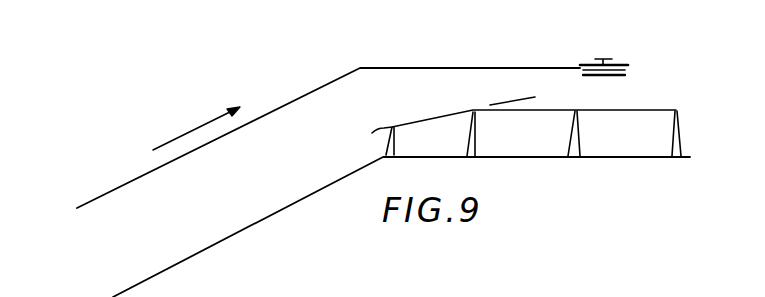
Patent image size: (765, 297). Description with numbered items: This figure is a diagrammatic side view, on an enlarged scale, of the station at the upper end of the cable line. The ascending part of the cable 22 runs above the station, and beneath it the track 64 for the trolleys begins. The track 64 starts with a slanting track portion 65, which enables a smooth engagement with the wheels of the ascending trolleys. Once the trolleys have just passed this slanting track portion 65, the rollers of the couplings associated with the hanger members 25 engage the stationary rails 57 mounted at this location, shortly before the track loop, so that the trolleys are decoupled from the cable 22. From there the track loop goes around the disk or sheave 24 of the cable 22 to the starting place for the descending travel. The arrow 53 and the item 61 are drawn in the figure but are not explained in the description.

The cable 22 is at (254, 118).
The disk or sheave 24 is at (622, 77).
The hanger members 25 is at (197, 150).
The direction of travel 53 is at (196, 128).
The stationary rails 57 is at (518, 100).
The belt 61 is at (467, 133).
The track 64 is at (545, 111).
The slanting track portion 65 is at (395, 126).